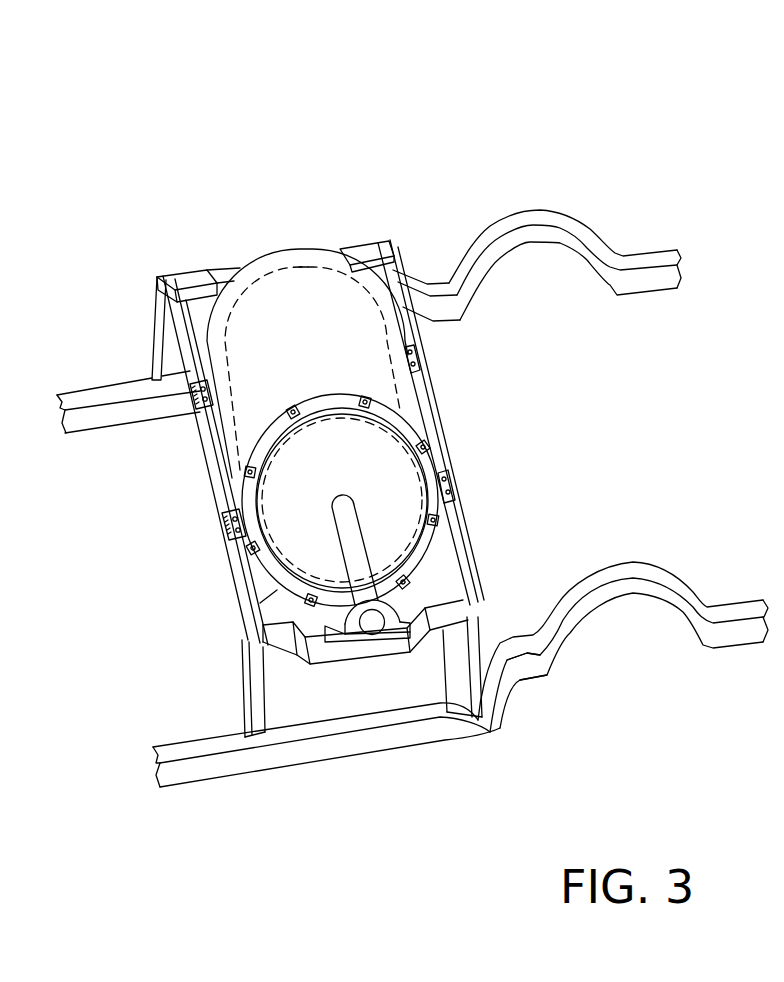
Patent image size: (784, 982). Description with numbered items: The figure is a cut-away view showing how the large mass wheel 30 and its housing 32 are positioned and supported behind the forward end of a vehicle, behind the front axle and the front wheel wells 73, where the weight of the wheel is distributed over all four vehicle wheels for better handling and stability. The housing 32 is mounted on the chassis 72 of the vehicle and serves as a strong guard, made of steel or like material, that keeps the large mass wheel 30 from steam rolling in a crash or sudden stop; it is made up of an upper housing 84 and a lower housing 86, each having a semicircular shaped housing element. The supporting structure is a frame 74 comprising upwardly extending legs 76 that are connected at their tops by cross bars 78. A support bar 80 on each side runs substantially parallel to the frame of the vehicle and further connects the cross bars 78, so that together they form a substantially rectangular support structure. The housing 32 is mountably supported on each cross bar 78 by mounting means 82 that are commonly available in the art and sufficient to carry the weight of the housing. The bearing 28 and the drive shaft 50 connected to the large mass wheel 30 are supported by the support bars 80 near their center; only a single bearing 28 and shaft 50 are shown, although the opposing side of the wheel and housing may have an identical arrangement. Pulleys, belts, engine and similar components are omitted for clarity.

The bearing 28 is at (352, 632).
The large mass wheel 30 is at (270, 312).
The housing 32 is at (288, 230).
The drive shaft 50 is at (352, 545).
The chassis 72 is at (542, 667).
The wheel wells 73 is at (522, 198).
The frame 74 is at (180, 522).
The legs 76 is at (152, 345).
The cross bars 78 is at (240, 575).
The support bar 80 is at (180, 278).
The mounting means 82 is at (197, 402).
The upper housing 84 is at (323, 266).
The lower housing 86 is at (275, 590).